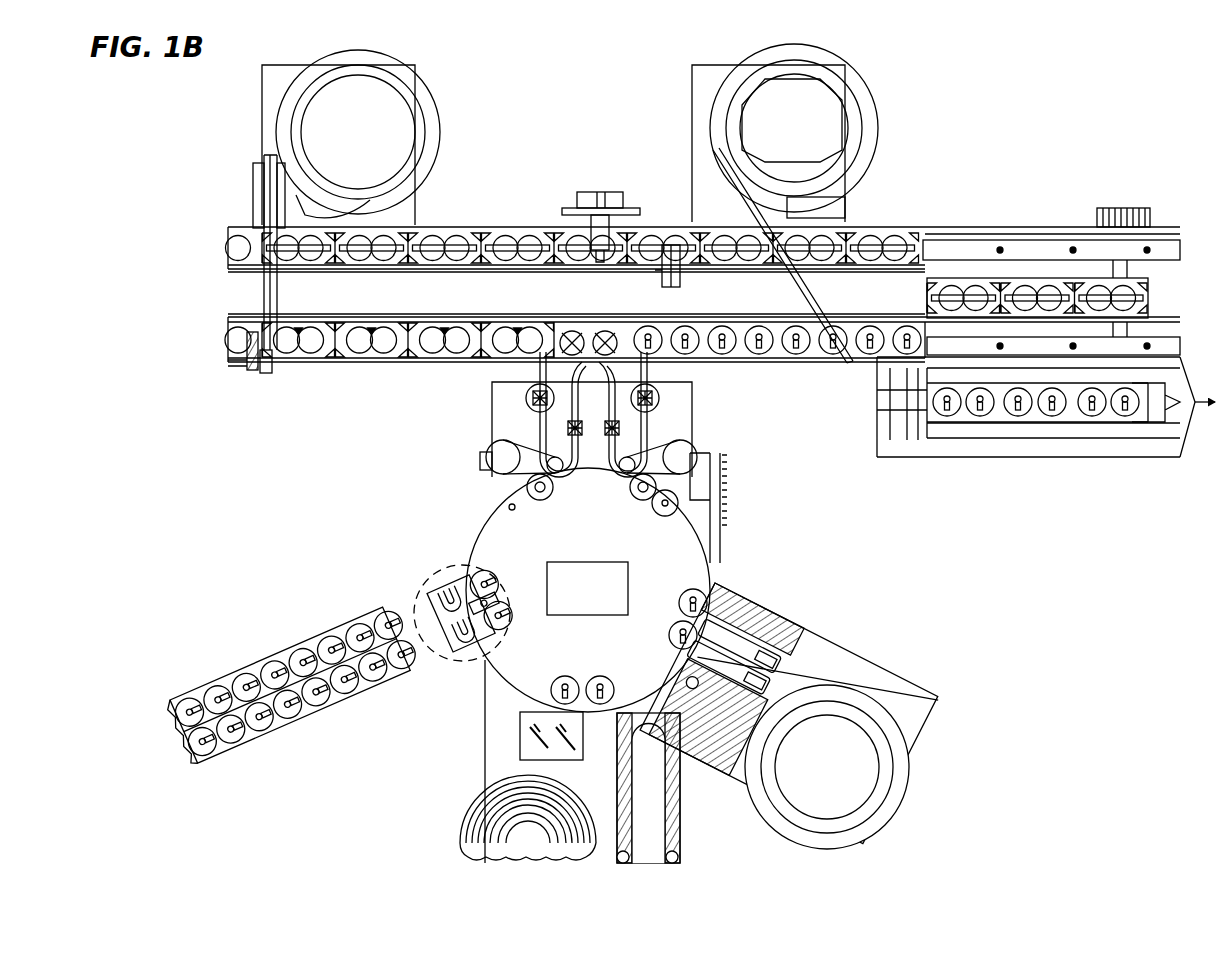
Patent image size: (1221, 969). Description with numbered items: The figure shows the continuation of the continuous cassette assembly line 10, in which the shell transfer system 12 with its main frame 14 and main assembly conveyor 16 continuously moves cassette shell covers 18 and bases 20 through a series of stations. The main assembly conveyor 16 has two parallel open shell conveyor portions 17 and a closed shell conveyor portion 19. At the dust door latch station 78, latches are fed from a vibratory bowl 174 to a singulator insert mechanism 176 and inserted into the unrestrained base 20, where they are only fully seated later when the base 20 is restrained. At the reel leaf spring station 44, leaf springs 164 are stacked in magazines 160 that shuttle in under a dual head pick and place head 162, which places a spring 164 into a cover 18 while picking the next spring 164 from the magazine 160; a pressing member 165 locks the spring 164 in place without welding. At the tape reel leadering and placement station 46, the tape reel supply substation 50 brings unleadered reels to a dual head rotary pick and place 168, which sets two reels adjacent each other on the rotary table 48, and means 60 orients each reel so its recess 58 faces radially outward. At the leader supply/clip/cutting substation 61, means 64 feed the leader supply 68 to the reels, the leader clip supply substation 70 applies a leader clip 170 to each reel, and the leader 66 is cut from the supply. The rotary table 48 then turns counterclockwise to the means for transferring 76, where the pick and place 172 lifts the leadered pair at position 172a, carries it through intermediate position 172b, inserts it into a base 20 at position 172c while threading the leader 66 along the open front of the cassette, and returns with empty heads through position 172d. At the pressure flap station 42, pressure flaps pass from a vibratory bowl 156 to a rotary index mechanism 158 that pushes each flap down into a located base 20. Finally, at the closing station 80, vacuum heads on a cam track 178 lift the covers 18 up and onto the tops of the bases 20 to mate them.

The line 10 is at (907, 621).
The shell transfer system 12 is at (250, 278).
The main frame 14 is at (455, 227).
The main assembly conveyor 16 is at (402, 374).
The open shell conveyor portions 17 is at (388, 275).
The cassette shell covers 18 is at (290, 265).
The closed shell conveyor portion 19 is at (1150, 438).
The bases 20 is at (290, 318).
The pressure flap station 42 is at (903, 115).
The reel leaf spring station 44 is at (601, 211).
The tape reel leadering and placement station 46 is at (746, 487).
The rotary table 48 is at (488, 549).
The tape reel supply substation 50 is at (274, 700).
The recess 58 is at (560, 696).
The means for orienting 60 is at (520, 738).
The leader supply/clip/cutting substation 61 is at (789, 704).
The means for feeding 64 is at (616, 797).
The leader 66 is at (607, 474).
The leader supply 68 is at (480, 830).
The leader clip supply substation 70 is at (883, 770).
The means for transferring 76 is at (456, 466).
The dust door latch station 78 is at (478, 100).
The closing station 80 is at (1097, 178).
The vibratory bowl 156 is at (842, 150).
The rotary index mechanism 158 is at (846, 368).
The magazines 160 is at (606, 194).
The dual head pick and place head 162 is at (630, 212).
The leaf springs 164 is at (578, 266).
The pressing member 165 is at (685, 282).
The dual head rotary pick and place 168 is at (420, 587).
The leader clip 170 is at (718, 556).
The pick and place 172 is at (568, 408).
The pick-up position 172a is at (645, 505).
The intermediate position 172b is at (652, 426).
The inserting position 172c is at (610, 326).
The intermediate position with empty heads 172d is at (652, 398).
The vibratory bowl 174 is at (386, 98).
The singulator insert mechanism 176 is at (233, 378).
The cam track 178 is at (985, 280).